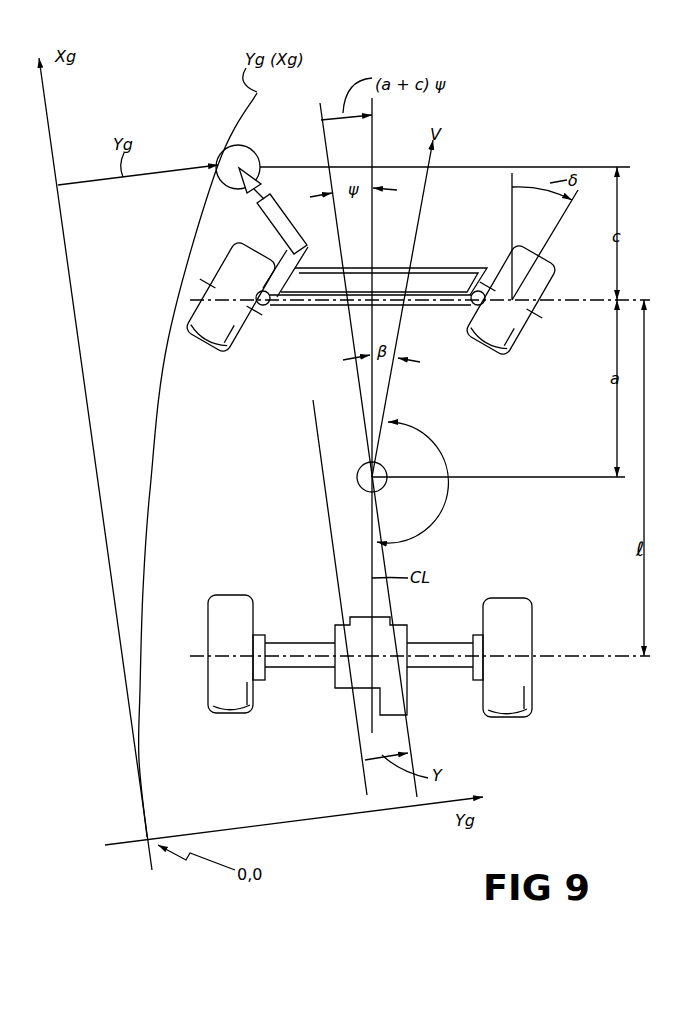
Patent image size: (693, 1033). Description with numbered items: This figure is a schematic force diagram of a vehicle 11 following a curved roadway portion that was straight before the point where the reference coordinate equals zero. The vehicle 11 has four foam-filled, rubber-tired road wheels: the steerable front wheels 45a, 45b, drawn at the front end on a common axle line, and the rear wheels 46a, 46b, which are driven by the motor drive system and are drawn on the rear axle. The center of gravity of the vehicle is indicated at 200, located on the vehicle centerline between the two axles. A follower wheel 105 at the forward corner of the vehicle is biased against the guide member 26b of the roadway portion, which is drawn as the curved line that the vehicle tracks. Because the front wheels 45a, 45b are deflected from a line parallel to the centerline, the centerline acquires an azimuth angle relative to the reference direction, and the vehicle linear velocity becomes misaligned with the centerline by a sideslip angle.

The vehicle 11 is at (270, 488).
The guide member 26b is at (245, 127).
The follower wheel 105 is at (258, 156).
The front wheel 45a is at (508, 357).
The front wheel 45b is at (223, 325).
The center of gravity 200 is at (358, 470).
The rear wheel 46a is at (515, 717).
The rear wheel 46b is at (223, 707).